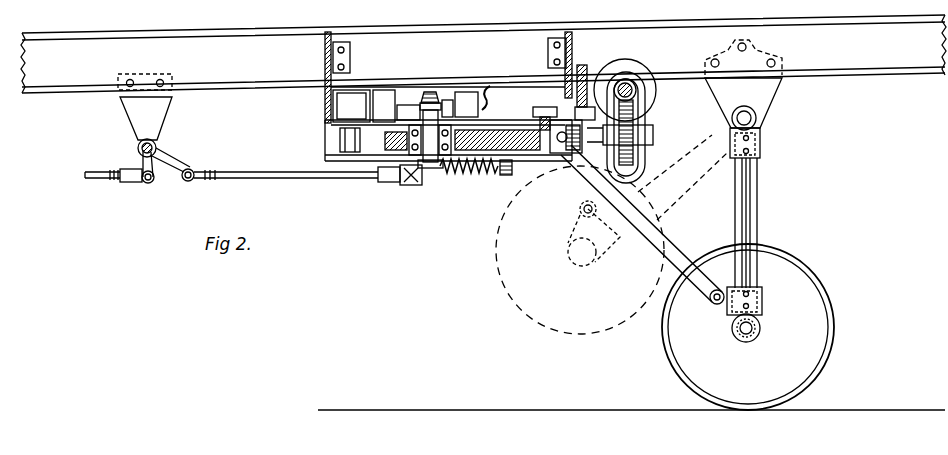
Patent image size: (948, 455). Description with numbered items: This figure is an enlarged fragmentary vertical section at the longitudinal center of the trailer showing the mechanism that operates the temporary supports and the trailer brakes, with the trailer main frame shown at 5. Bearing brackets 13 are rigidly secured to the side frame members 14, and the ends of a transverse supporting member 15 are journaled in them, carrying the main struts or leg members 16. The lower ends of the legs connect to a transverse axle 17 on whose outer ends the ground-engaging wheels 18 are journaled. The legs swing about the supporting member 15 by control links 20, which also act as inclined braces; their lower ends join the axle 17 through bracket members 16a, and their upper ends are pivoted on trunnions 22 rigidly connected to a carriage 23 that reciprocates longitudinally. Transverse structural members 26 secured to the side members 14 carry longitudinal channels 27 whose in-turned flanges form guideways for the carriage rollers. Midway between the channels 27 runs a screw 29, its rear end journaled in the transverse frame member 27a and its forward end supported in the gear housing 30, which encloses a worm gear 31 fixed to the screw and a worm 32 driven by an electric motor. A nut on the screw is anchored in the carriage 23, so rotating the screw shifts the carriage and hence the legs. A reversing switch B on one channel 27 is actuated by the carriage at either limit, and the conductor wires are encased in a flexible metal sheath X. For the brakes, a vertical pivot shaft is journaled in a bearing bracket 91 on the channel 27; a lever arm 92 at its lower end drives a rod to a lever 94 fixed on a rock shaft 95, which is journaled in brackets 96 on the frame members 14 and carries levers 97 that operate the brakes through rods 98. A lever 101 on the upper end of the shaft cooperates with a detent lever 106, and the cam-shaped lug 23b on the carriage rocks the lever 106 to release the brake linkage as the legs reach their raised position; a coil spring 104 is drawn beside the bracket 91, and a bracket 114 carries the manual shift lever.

The frame beam 5 is at (425, 44).
The side frame members 14 is at (835, 61).
The bearing brackets 13 is at (760, 91).
The supporting member 15 is at (757, 122).
The leg members 16 is at (759, 190).
The bracket members 16a is at (724, 349).
The axle 17 is at (760, 328).
The ground-engaging wheels 18 is at (811, 270).
The control links 20 is at (657, 244).
The trunnions 22 is at (578, 211).
The transverse structural members 26 is at (325, 112).
The transverse frame member 27a is at (328, 149).
The channel members 27 is at (530, 128).
The screw 29 is at (505, 166).
The gear housing 30 is at (653, 118).
The worm gear 31 is at (645, 152).
The worm 32 is at (637, 82).
The carriage 23 is at (548, 116).
The cam-shaped lug 23b is at (545, 104).
The metal flexible sheath X is at (543, 110).
The reversing switch B is at (463, 98).
The lever 101 is at (447, 114).
The detent lever 106 is at (402, 108).
The bracket 114 is at (430, 92).
The spring 104 is at (467, 170).
The bearing bracket 91 is at (398, 181).
The lever arm 92 is at (414, 184).
The lever 94 is at (173, 165).
The rock shaft 95 is at (163, 144).
The brackets 96 is at (138, 120).
The levers 97 is at (140, 166).
The rods 98 is at (100, 180).